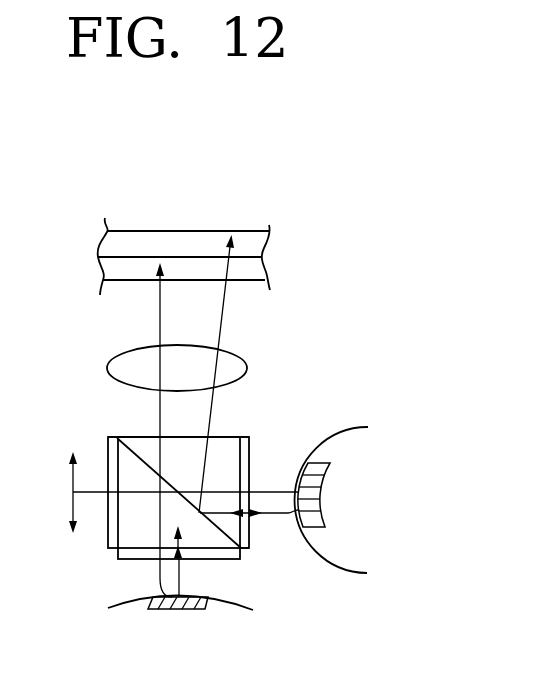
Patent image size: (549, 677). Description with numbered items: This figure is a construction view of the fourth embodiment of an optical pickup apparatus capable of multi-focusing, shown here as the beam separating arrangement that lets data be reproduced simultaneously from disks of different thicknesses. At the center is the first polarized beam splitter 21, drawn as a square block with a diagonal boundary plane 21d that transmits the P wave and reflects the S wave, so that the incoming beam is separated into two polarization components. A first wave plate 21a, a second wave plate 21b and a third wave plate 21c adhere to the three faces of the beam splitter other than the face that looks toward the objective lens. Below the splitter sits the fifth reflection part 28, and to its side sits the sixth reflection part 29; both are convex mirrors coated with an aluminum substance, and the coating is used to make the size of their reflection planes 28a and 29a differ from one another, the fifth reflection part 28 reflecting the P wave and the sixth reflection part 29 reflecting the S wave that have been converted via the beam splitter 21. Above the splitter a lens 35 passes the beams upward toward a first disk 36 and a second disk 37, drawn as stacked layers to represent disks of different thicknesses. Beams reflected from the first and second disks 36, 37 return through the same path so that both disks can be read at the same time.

The first polarized beam splitter 21 is at (192, 495).
The first wave plate 21a is at (114, 440).
The second wave plate 21b is at (242, 549).
The third wave plate 21c is at (250, 437).
The boundary plane 21d is at (179, 491).
The fifth reflection part 28 is at (244, 614).
The reflection plane 28a is at (203, 612).
The sixth reflection part 29 is at (348, 572).
The reflection plane 29a is at (327, 491).
The lens 35 is at (248, 366).
The first disk 36 is at (249, 273).
The second disk 37 is at (104, 233).